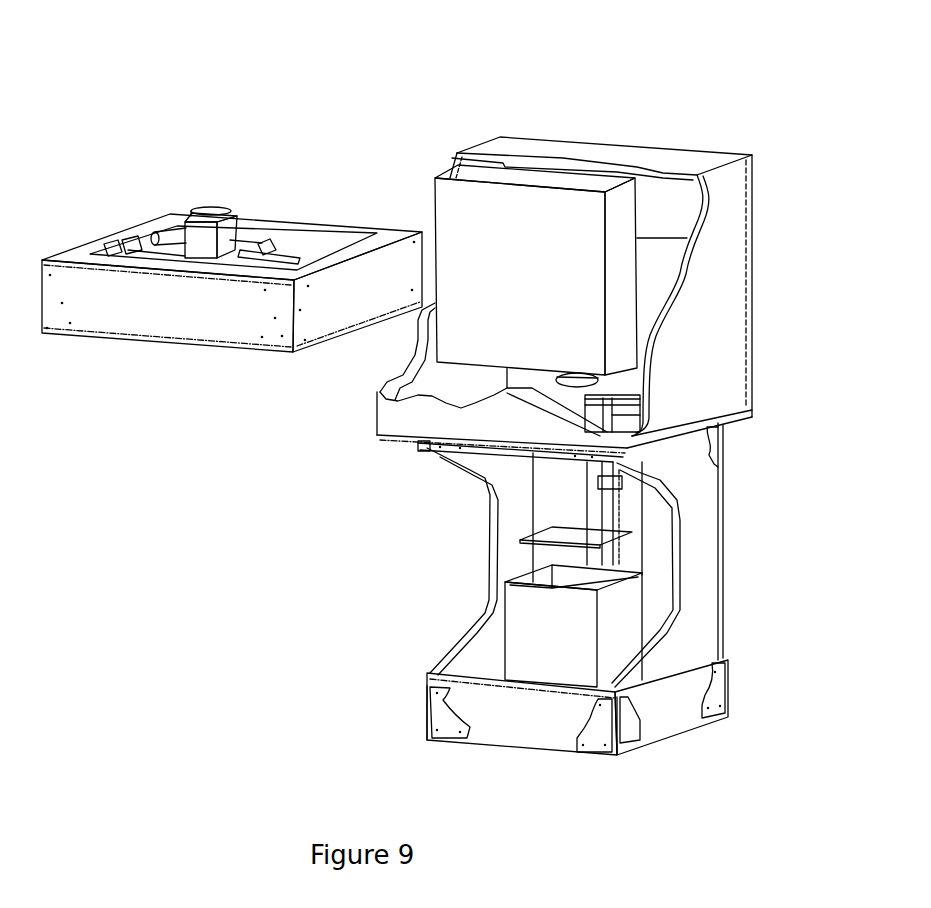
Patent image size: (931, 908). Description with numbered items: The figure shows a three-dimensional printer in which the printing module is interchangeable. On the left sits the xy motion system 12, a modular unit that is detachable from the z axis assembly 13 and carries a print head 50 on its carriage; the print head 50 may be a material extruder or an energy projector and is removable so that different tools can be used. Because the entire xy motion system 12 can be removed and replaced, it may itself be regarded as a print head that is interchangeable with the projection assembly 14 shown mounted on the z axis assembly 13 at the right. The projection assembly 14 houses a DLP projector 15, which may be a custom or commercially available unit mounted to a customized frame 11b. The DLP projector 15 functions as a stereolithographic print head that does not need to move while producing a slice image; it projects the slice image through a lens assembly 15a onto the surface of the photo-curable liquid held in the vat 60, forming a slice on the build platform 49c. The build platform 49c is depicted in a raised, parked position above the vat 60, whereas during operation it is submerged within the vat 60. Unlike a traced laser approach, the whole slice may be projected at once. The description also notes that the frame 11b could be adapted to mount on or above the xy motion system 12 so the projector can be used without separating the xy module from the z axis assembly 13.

The xy motion system 12 is at (232, 203).
The print head 50 is at (211, 193).
The projection assembly 14 is at (523, 391).
The frame 11b is at (619, 271).
The DLP projector 15 is at (505, 268).
The lens assembly 15a is at (569, 342).
The z axis assembly 13 is at (493, 601).
The build platform 49c is at (522, 526).
The vat 60 is at (565, 656).